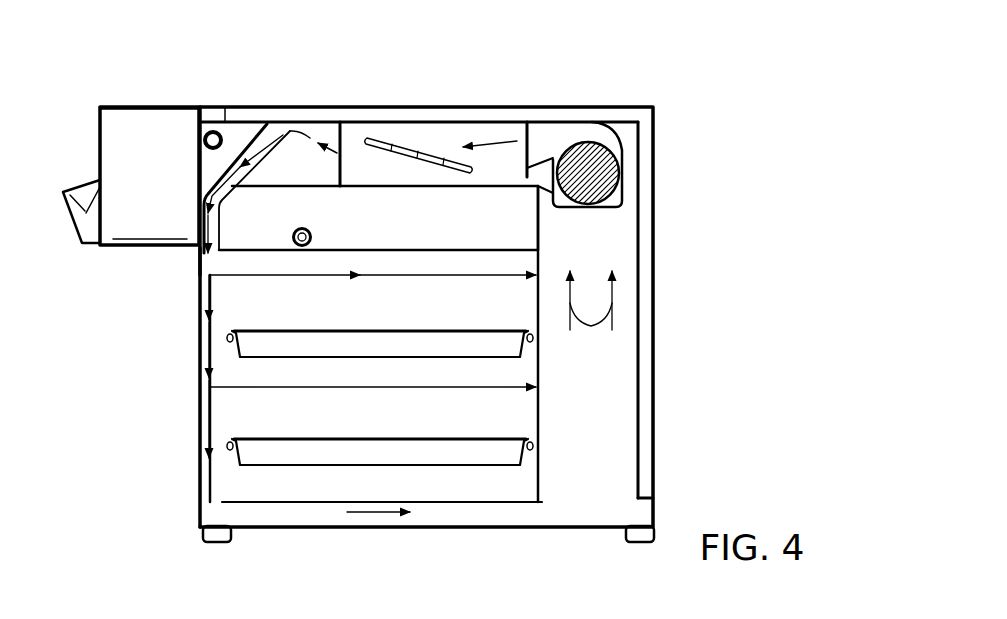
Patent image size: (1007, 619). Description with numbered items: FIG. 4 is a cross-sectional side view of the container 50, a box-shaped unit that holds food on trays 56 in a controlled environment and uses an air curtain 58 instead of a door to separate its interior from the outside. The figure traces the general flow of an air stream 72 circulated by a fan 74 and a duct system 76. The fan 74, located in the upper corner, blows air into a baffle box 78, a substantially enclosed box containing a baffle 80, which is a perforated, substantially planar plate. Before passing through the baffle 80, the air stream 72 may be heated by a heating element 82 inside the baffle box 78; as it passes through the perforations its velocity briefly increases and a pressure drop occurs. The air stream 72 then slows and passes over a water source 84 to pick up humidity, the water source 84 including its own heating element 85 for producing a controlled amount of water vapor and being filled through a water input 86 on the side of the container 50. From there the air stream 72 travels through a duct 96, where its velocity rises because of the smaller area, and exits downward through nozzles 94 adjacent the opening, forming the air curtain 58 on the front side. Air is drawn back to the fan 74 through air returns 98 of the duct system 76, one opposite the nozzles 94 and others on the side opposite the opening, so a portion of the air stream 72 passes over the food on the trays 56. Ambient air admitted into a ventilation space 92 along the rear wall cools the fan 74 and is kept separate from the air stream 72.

The container 50 is at (657, 81).
The trays 56 is at (272, 347).
The air curtain 58 is at (208, 354).
The air stream 72 is at (307, 133).
The fan 74 is at (569, 135).
The duct system 76 is at (202, 192).
The baffle box 78 is at (471, 121).
The baffle 80 is at (329, 122).
The heating element 82 is at (441, 150).
The water source 84 is at (502, 218).
The heating element 85 is at (292, 228).
The water input 86 is at (70, 220).
The ventilation space 92 is at (645, 356).
The nozzles 94 is at (200, 265).
The duct 96 is at (234, 156).
The air returns 98 is at (198, 503).